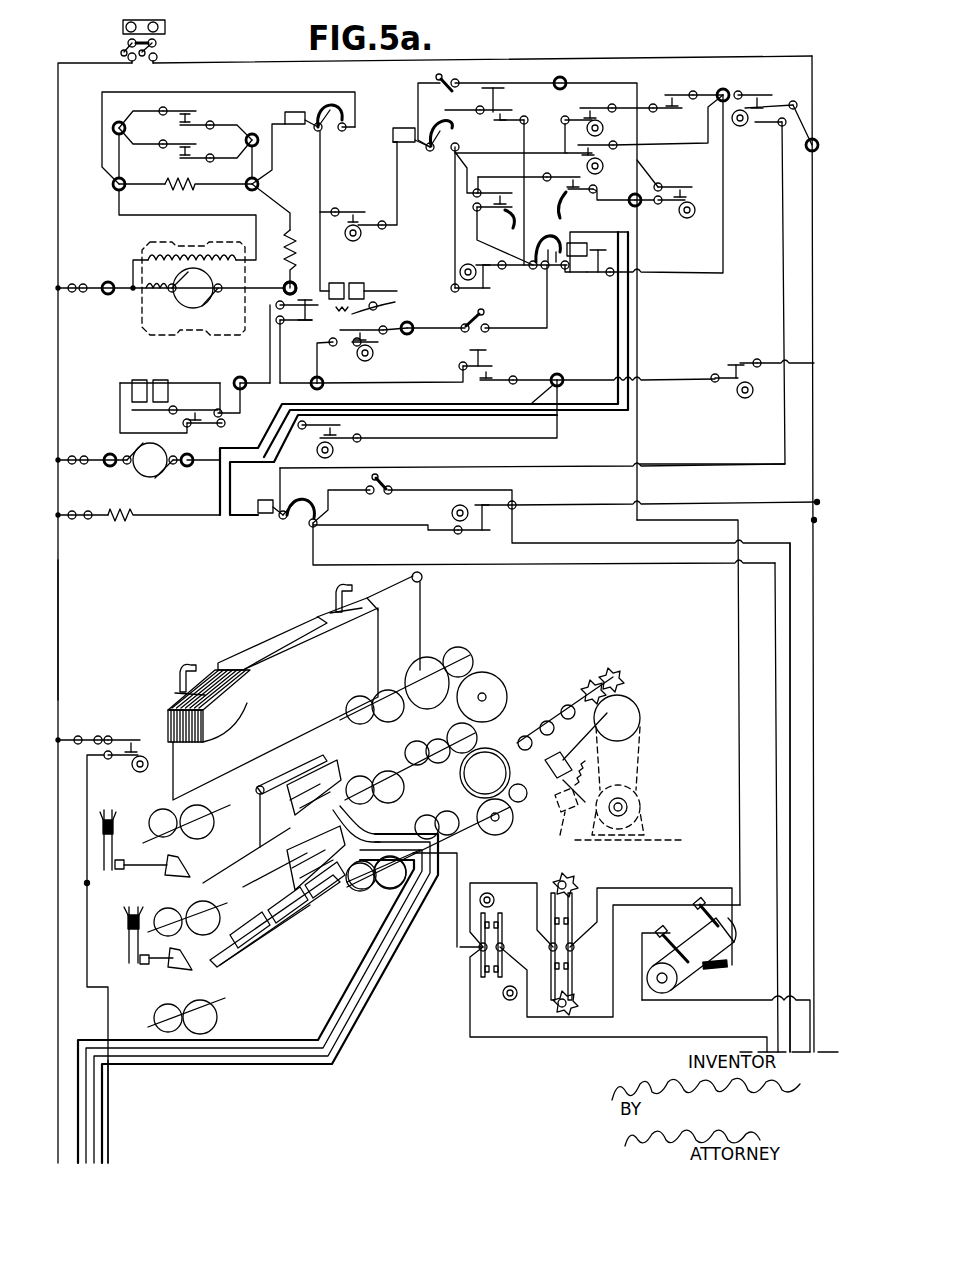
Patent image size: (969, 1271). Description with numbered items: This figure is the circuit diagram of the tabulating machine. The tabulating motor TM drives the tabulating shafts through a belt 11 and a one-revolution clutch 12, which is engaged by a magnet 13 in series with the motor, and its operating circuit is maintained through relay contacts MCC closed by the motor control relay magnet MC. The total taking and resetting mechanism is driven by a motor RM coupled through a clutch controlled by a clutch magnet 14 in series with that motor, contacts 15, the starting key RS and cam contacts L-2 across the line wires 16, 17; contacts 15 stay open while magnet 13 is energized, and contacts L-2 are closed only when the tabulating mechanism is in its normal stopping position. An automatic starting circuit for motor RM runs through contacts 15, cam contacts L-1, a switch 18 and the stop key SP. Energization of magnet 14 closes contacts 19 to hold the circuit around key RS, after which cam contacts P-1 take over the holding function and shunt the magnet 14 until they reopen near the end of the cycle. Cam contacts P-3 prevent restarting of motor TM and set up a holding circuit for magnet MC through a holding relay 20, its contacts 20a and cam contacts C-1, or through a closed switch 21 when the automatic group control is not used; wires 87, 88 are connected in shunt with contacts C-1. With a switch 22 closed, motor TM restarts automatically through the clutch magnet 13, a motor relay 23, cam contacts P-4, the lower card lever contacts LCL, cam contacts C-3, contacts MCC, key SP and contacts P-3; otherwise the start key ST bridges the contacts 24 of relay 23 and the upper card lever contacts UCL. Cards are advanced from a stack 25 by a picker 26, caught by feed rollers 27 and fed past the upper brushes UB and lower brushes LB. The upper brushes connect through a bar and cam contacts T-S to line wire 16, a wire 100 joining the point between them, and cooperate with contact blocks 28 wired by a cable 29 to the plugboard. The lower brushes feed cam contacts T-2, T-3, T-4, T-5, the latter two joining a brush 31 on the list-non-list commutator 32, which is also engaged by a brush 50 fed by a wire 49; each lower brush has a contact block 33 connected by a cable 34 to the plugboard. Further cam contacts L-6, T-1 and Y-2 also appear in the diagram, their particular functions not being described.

The belt 11 is at (632, 757).
The clutch 12 is at (570, 735).
The clutch magnet 13 is at (424, 569).
The clutch magnet 14 is at (172, 395).
The contacts 15 is at (292, 292).
The line wire 16 is at (58, 631).
The line wire 17 is at (814, 520).
The switch 18 is at (470, 314).
The contacts 19 is at (186, 428).
The holding relay 20 is at (262, 500).
The contacts 20a is at (306, 502).
The switch 21 is at (392, 485).
The switch 22 is at (460, 85).
The motor relay 23 is at (404, 128).
The contacts 24 is at (453, 124).
The stack 25 is at (220, 682).
The picker 26 is at (268, 644).
The feed rollers 27 is at (188, 824).
The contact blocks 28 is at (325, 780).
The cable 29 is at (370, 1006).
The brush 31 is at (714, 972).
The list-non-list commutator 32 is at (690, 946).
The contact block 33 is at (240, 948).
The cable 34 is at (243, 1040).
The wire 49 is at (746, 1002).
The brush 50 is at (646, 960).
The wire 87 is at (777, 614).
The wire 88 is at (790, 634).
The wire 100 is at (112, 1107).
The tabulating motor TM is at (660, 810).
The motor RM is at (138, 465).
The start key ST is at (510, 116).
The cam contacts L-1 is at (376, 340).
The cam contacts L-2 is at (728, 368).
The relay L-6 is at (575, 112).
The relay T-1 is at (606, 152).
The cam contacts T-2 is at (493, 918).
The cam contacts T-3 is at (492, 988).
The cam contacts T-4 is at (565, 912).
The cam contacts T-5 is at (573, 968).
The cam contacts T-S is at (138, 742).
The cam contacts P-1 is at (345, 427).
The cam contacts P-3 is at (770, 100).
The cam contacts P-4 is at (686, 194).
The relay Y-2 is at (664, 100).
The cam contacts C-1 is at (486, 524).
The cam contacts C-3 is at (490, 280).
The starting key RS is at (488, 366).
The stop key SP is at (618, 268).
The motor control relay magnet MC is at (580, 262).
The relay contacts MCC is at (556, 240).
The upper card lever contacts UCL is at (470, 200).
The lower card lever contacts LCL is at (586, 178).
The upper brushes UB is at (320, 772).
The lower brushes LB is at (306, 852).